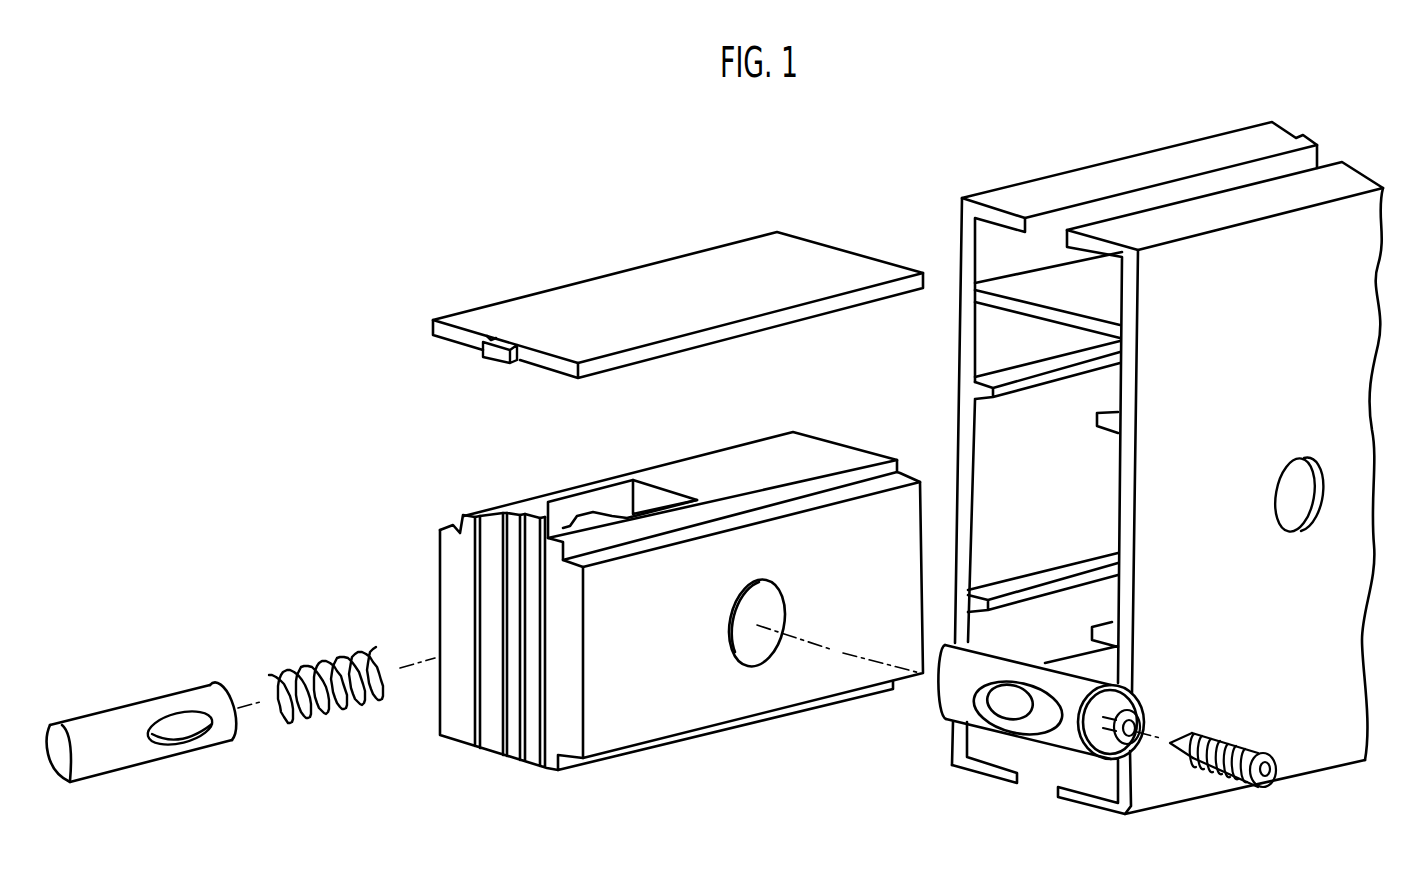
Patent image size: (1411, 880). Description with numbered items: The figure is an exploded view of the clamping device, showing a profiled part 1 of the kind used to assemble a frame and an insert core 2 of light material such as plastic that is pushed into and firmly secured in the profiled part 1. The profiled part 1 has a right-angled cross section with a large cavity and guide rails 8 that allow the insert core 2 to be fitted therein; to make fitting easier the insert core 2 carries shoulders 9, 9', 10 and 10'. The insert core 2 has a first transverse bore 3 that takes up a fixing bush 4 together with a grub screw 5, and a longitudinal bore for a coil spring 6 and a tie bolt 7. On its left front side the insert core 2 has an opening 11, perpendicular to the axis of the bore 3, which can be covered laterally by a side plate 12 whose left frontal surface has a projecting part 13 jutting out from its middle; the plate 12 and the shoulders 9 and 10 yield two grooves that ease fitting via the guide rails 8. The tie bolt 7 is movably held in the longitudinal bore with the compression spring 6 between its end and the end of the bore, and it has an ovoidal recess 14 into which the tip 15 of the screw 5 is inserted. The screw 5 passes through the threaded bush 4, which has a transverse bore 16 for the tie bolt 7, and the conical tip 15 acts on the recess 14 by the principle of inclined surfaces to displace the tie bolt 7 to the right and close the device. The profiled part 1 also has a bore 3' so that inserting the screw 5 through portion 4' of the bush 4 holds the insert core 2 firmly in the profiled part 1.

The profiled part 1 is at (997, 180).
The insert core 2 is at (440, 458).
The first transverse bore 3 is at (754, 682).
The bore 3' is at (1289, 485).
The fixing bush 4 is at (1014, 702).
The portion of the threaded bush 4' is at (1137, 695).
The grub screw 5 is at (1242, 795).
The coil spring 6 is at (303, 668).
The tie bolt 7 is at (127, 695).
The guide rails 8 is at (1103, 623).
The shoulder 9 is at (480, 627).
The shoulder 9' is at (423, 754).
The shoulder 10 is at (698, 581).
The shoulder 10' is at (586, 812).
The opening 11 is at (517, 763).
The side plate 12 is at (583, 270).
The projecting part 13 is at (502, 355).
The recess 14 is at (190, 734).
The tip of the screw 15 is at (1183, 750).
The transverse bore of the bush 16 is at (1018, 725).